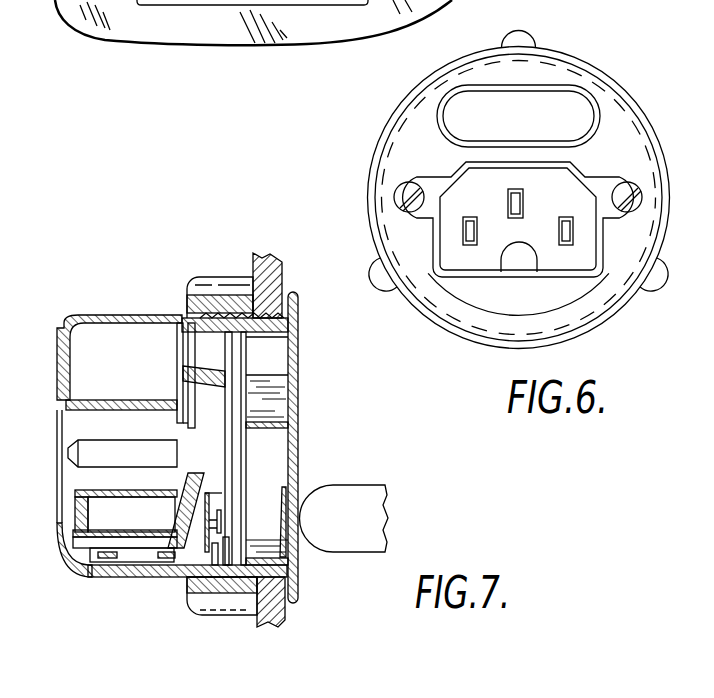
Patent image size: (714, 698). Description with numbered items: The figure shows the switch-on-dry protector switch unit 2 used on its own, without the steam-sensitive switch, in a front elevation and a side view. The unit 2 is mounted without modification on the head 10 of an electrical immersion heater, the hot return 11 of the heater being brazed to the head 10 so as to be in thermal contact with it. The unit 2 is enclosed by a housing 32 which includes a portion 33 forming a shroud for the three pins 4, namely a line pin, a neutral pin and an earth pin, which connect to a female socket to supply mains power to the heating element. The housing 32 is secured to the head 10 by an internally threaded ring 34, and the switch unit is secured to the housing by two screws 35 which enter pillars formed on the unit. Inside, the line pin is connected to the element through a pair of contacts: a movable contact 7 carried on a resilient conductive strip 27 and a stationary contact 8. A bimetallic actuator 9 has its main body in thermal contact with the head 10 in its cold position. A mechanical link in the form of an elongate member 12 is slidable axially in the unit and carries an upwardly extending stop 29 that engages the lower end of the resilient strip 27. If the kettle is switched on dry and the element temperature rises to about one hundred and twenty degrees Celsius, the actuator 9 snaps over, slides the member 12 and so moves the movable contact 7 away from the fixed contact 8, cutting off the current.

In FIG. 7, the switch-on-dry protector switch unit 2 is at (236, 407).
In FIG. 6, the pins 4 is at (507, 212).
In FIG. 7, the pins 4 is at (107, 443).
In FIG. 7, the movable contact 7 is at (200, 521).
In FIG. 7, the stationary contact 8 is at (203, 525).
In FIG. 7, the bimetallic actuator 9 is at (277, 490).
In FIG. 7, the head 10 is at (296, 377).
In FIG. 7, the hot return 11 is at (352, 540).
In FIG. 7, the elongate member 12 is at (127, 557).
In FIG. 7, the resilient conductive strip 27 is at (210, 495).
In FIG. 7, the stop 29 is at (180, 577).
In FIG. 6, the housing 32 is at (580, 305).
In FIG. 7, the housing 32 is at (68, 315).
In FIG. 7, the portion forming a shroud 33 is at (108, 399).
In FIG. 6, the internally threaded ring 34 is at (558, 62).
In FIG. 7, the internally threaded ring 34 is at (195, 303).
In FIG. 6, the screws 35 is at (397, 197).